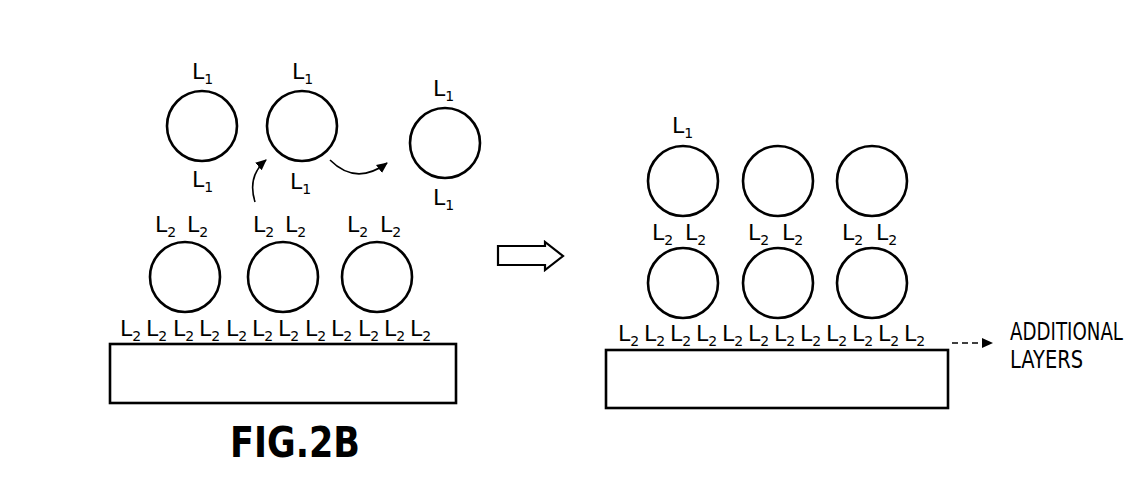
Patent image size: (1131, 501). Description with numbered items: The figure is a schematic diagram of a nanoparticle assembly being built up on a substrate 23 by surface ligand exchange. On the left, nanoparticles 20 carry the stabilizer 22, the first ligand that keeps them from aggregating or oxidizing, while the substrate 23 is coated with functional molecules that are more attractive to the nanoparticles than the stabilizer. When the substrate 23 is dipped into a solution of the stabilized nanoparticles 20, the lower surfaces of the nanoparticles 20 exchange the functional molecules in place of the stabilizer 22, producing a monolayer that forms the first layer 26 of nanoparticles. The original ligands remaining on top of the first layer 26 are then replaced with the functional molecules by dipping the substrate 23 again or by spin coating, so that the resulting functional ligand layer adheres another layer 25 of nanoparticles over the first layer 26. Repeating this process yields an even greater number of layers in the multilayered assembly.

The nanoparticle 20 is at (168, 118).
The stabilizer 22 is at (449, 71).
The substrate 23 is at (110, 381).
The another layer of nanoparticles 25 is at (923, 172).
The first layer of nanoparticles 26 is at (921, 285).